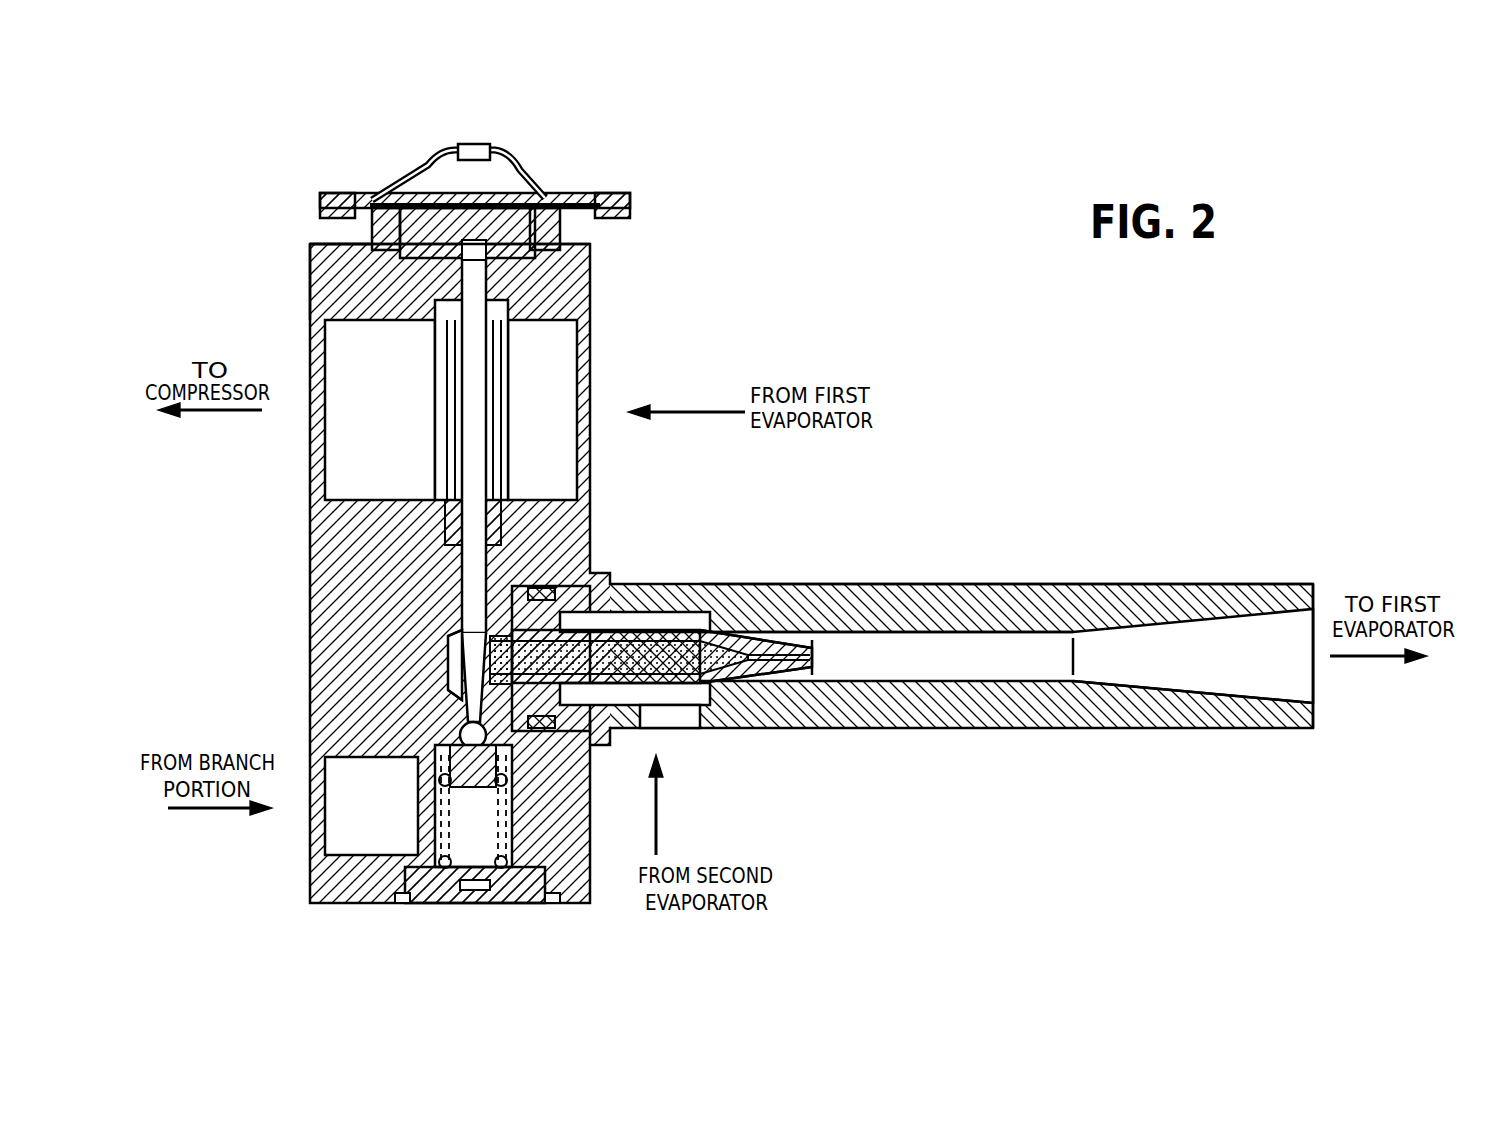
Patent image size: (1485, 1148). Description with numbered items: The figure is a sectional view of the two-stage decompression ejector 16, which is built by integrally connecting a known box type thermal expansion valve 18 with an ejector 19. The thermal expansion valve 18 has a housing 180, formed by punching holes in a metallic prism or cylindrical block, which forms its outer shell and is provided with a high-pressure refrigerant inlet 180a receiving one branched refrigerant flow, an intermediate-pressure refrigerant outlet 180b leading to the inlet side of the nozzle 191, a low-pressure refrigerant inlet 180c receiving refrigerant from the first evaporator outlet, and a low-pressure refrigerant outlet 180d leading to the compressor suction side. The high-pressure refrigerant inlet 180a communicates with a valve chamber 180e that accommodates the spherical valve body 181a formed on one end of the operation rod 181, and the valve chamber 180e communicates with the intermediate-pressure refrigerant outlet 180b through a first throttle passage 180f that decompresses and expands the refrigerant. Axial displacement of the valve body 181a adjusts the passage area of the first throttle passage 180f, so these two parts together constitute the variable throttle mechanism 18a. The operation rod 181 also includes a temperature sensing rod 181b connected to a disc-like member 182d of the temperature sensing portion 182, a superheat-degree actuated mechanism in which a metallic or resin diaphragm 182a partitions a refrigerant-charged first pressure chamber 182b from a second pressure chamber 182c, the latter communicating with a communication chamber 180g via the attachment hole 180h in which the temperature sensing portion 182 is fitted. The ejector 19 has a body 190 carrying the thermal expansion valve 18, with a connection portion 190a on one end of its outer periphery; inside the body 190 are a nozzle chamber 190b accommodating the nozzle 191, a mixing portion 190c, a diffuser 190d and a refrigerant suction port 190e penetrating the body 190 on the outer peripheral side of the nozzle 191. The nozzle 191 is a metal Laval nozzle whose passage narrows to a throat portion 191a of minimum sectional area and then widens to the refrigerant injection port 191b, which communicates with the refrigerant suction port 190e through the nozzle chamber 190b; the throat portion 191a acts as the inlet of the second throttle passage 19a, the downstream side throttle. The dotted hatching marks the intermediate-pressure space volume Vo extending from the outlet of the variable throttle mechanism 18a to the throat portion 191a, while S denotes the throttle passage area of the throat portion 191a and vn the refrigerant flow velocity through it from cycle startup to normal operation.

The two-stage decompression ejector 16 is at (925, 236).
The thermal expansion valve 18 is at (660, 193).
The variable throttle mechanism 18a is at (212, 617).
The ejector 19 is at (960, 532).
The second throttle passage 19a is at (805, 632).
The housing 180 is at (590, 279).
The high-pressure refrigerant inlet 180a is at (325, 855).
The intermediate-pressure refrigerant outlet 180b is at (565, 545).
The low-pressure refrigerant inlet 180c is at (578, 330).
The low-pressure refrigerant outlet 180d is at (310, 320).
The valve chamber 180e is at (460, 737).
The first throttle passage 180f is at (447, 655).
The communication chamber 180g is at (450, 438).
The attachment hole 180h is at (310, 263).
The operation rod 181 is at (458, 377).
The valve body 181a is at (462, 722).
The temperature sensing rod 181b is at (473, 372).
The temperature sensing portion 182 is at (537, 178).
The diaphragm 182a is at (545, 200).
The first pressure chamber 182b is at (450, 185).
The second pressure chamber 182c is at (600, 230).
The disc-like member 182d is at (427, 225).
The body 190 is at (1035, 592).
The connection portion 190a is at (623, 590).
The nozzle chamber 190b is at (696, 720).
The mixing portion 190c is at (925, 657).
The diffuser 190d is at (1192, 660).
The refrigerant suction port 190e is at (677, 720).
The nozzle 191 is at (712, 658).
The throat portion 191a is at (700, 630).
The refrigerant injection port 191b is at (820, 650).
The throttle passage area S is at (628, 655).
The flow velocity vn is at (752, 645).
The intermediate-pressure space volume Vo is at (590, 720).